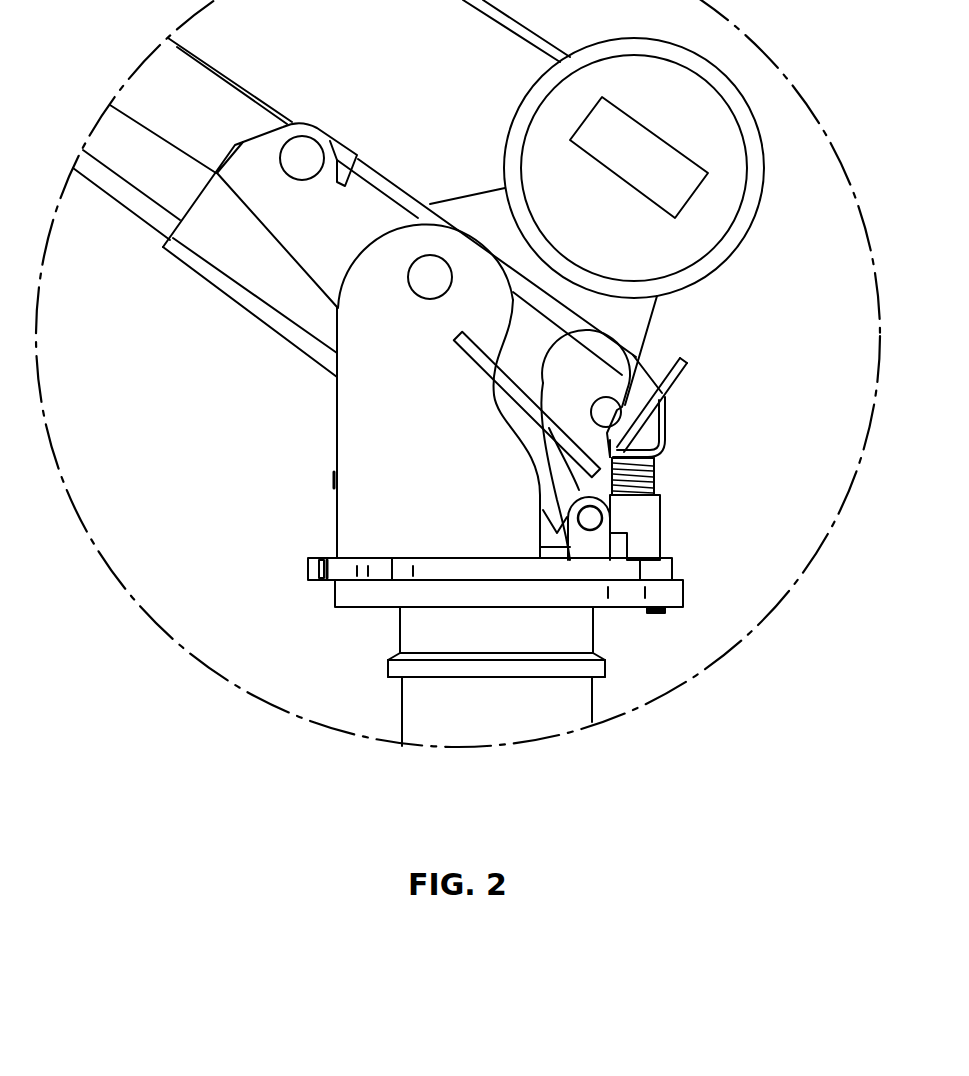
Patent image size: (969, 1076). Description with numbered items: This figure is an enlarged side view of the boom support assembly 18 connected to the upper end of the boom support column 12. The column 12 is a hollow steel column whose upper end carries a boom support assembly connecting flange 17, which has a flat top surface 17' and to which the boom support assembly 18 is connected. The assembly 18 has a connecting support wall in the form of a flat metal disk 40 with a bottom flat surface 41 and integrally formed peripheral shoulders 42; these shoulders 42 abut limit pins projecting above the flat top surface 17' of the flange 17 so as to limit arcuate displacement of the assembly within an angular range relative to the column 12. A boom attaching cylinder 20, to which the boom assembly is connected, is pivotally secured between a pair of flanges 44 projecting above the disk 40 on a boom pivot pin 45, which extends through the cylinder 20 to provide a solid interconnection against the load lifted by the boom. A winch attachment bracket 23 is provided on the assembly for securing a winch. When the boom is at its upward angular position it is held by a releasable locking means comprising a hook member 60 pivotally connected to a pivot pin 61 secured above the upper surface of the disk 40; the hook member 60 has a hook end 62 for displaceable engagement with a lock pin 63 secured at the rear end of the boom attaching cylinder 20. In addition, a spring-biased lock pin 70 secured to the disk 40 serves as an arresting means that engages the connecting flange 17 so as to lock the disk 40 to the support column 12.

The boom support column 12 is at (433, 698).
The boom support assembly connecting flange 17 is at (497, 620).
The flat top surface of the connecting flange 17' is at (631, 612).
The boom support assembly 18 is at (738, 285).
The boom attaching cylinder 20 is at (350, 206).
The winch attachment bracket 23 is at (641, 312).
The flat metal disk 40 is at (430, 570).
The bottom flat surface 41 is at (322, 578).
The peripheral shoulders 42 is at (340, 565).
The flanges 44 is at (362, 405).
The boom pivot pin 45 is at (430, 283).
The hook member 60 is at (563, 390).
The pivot pin 61 is at (593, 518).
The hook end 62 is at (612, 383).
The lock pin 63 is at (607, 413).
The lock pin 70 is at (657, 487).